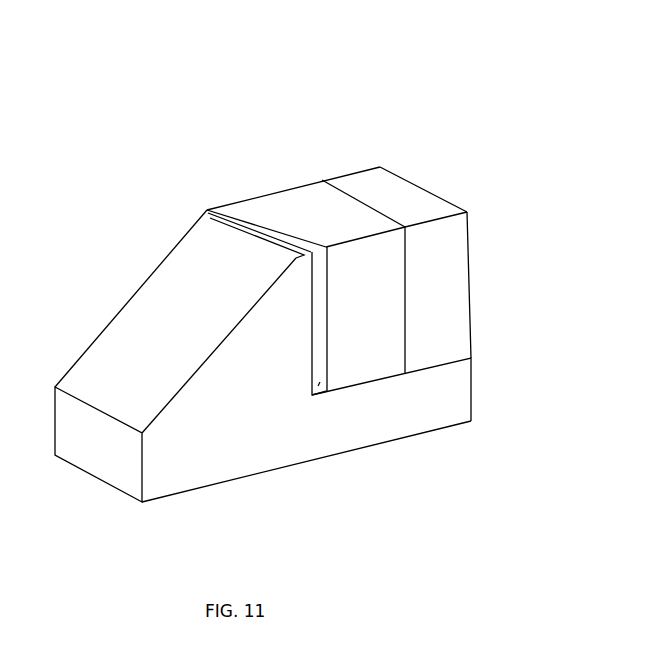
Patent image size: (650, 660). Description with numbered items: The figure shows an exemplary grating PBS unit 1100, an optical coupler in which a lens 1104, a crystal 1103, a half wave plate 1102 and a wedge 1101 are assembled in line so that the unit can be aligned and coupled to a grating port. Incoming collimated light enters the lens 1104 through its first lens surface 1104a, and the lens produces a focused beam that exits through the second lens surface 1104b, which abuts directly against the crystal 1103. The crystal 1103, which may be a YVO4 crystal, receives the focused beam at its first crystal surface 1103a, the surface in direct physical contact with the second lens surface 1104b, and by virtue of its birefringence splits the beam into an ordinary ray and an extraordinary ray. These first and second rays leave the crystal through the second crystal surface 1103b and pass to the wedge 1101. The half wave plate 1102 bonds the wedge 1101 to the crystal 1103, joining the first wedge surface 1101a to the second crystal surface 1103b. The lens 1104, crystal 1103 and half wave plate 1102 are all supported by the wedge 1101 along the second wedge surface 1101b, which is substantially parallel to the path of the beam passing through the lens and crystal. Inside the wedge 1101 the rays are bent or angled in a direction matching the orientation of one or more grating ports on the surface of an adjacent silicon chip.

The grating PBS unit 1100 is at (115, 114).
The wedge 1101 is at (145, 303).
The first wedge surface 1101a is at (306, 300).
The second wedge surface 1101b is at (455, 361).
The half wave plate 1102 is at (321, 383).
The crystal 1103 is at (305, 191).
The first crystal surface 1103a is at (402, 312).
The second crystal surface 1103b is at (322, 358).
The lens 1104 is at (369, 178).
The first lens surface 1104a is at (471, 236).
The second lens surface 1104b is at (392, 213).